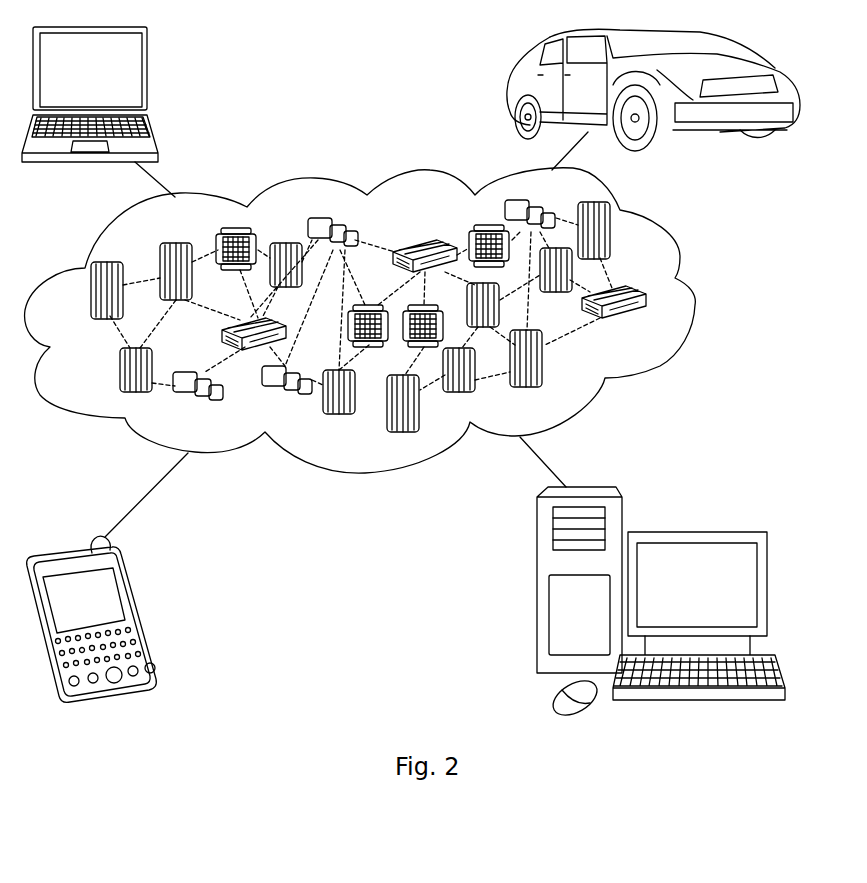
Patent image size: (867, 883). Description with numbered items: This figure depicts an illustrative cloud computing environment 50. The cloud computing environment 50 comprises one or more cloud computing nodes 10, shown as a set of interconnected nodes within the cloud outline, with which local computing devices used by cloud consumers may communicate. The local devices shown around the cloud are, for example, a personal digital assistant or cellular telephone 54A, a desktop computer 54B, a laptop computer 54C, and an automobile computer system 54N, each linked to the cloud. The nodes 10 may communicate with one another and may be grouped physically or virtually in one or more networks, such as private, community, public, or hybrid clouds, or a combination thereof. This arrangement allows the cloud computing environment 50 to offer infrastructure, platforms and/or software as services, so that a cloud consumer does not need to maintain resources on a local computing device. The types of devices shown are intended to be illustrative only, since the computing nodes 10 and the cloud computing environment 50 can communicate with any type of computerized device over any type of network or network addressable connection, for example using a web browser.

The cloud computing node 10 is at (658, 335).
The cloud computing environment 50 is at (695, 299).
The personal digital assistant or cellular telephone 54A is at (140, 606).
The desktop computer 54B is at (696, 532).
The laptop computer 54C is at (147, 78).
The automobile computer system 54N is at (513, 93).